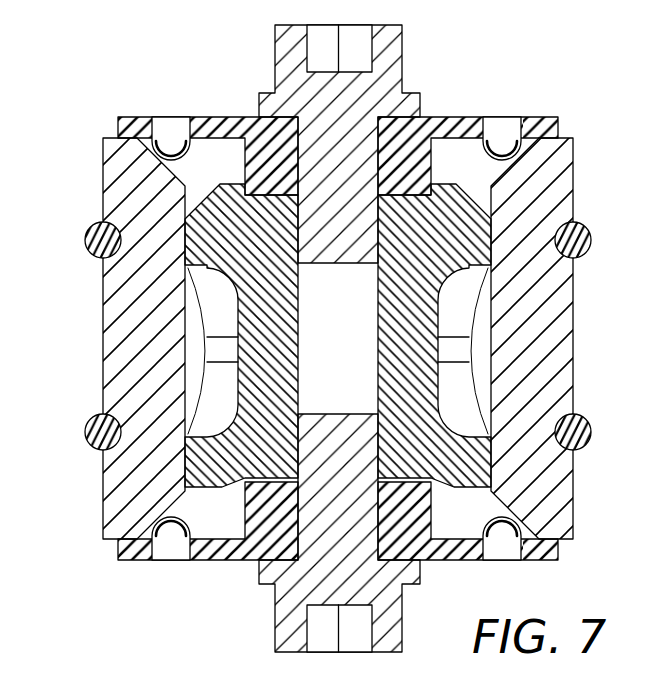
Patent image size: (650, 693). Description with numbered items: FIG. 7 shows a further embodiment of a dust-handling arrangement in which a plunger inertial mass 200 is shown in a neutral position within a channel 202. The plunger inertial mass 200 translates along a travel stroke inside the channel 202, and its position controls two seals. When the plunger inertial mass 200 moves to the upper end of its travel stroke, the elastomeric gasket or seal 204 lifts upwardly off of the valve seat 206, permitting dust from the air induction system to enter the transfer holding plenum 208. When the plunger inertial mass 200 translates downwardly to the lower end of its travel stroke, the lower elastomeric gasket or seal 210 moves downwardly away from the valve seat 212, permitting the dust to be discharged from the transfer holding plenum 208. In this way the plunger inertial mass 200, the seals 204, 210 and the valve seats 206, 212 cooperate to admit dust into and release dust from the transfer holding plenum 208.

The plunger inertial mass 200 is at (205, 248).
The channel 202 is at (117, 200).
The elastomeric gasket or seal 204 is at (128, 132).
The valve seat 206 is at (110, 135).
The transfer holding plenum 208 is at (222, 380).
The lower elastomeric gasket or seal 210 is at (130, 553).
The valve seat 212 is at (113, 539).